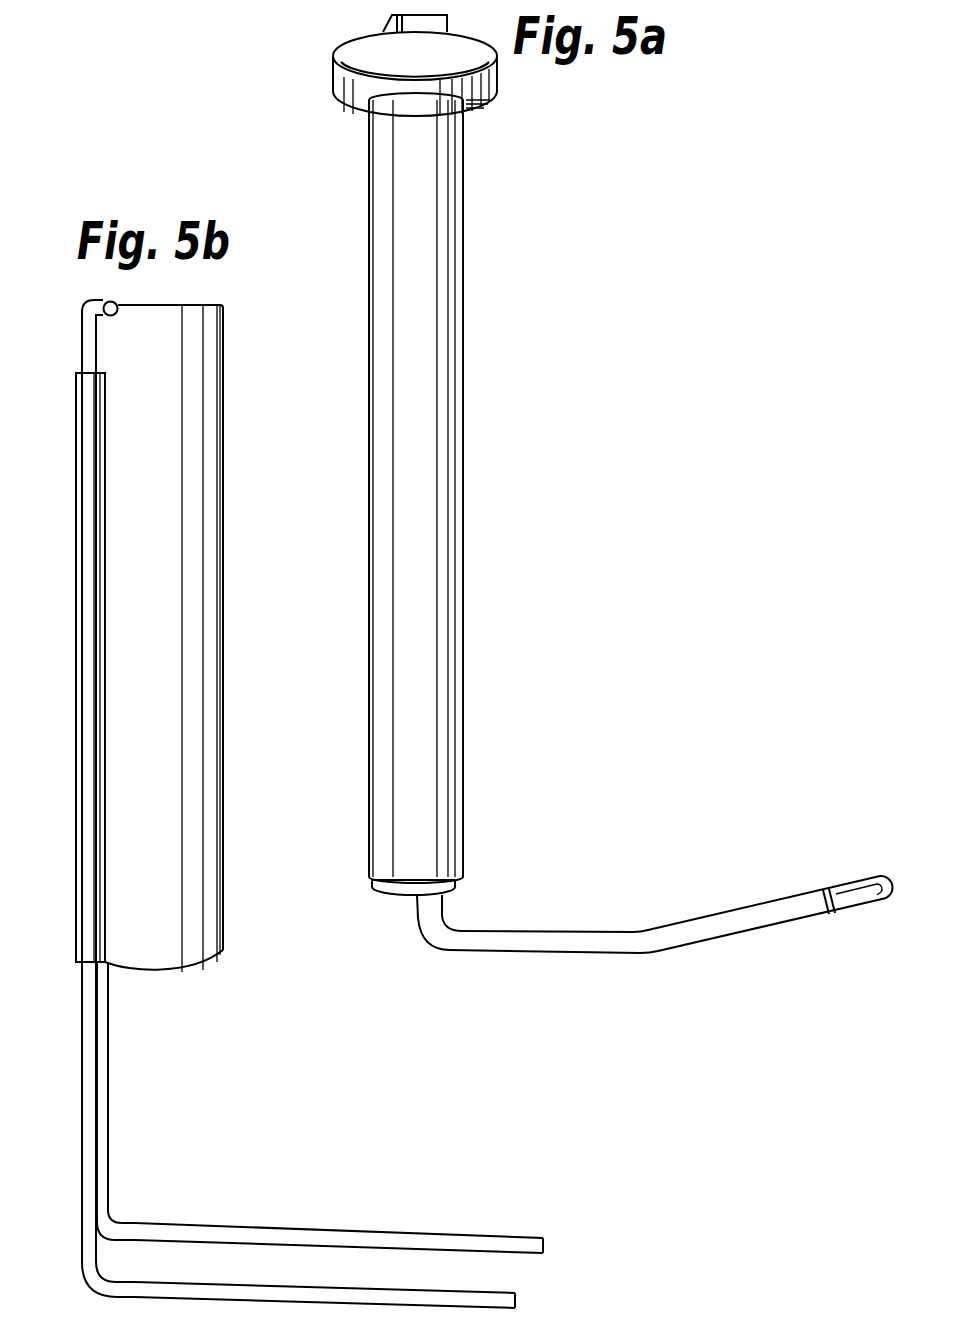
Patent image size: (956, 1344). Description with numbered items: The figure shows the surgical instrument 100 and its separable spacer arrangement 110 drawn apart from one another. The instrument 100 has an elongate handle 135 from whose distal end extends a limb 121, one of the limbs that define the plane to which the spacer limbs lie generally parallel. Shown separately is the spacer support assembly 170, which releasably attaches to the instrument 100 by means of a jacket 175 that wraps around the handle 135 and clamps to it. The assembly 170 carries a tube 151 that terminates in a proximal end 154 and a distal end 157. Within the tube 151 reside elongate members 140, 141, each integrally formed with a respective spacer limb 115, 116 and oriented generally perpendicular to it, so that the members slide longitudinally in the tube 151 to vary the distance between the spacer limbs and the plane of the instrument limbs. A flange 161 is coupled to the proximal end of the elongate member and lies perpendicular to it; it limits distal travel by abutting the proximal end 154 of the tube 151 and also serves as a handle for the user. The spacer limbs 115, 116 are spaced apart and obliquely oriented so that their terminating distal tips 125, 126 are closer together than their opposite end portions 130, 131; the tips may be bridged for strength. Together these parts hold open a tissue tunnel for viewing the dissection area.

In FIG. 5A, the surgical instrument 100 is at (365, 267).
In FIG. 5A, the handle 135 is at (368, 428).
In FIG. 5A, the limb 121 is at (727, 937).
In FIG. 5B, the spacer support assembly 170 is at (232, 557).
In FIG. 5B, the tube 151 is at (103, 677).
In FIG. 5B, the jacket 175 is at (223, 778).
In FIG. 5B, the flange 161 is at (100, 300).
In FIG. 5B, the proximal end 154 is at (97, 372).
In FIG. 5B, the distal end 157 is at (85, 965).
In FIG. 5B, the spacer arrangement 110 is at (197, 1140).
In FIG. 5B, the elongate member 140 is at (108, 1052).
In FIG. 5B, the elongate member 141 is at (93, 1112).
In FIG. 5B, the end portion 130 is at (108, 1222).
In FIG. 5B, the end portion 131 is at (87, 1283).
In FIG. 5B, the spacer limb 115 is at (358, 1237).
In FIG. 5B, the spacer limb 116 is at (262, 1295).
In FIG. 5B, the distal tip 125 is at (545, 1245).
In FIG. 5B, the distal tip 126 is at (518, 1300).